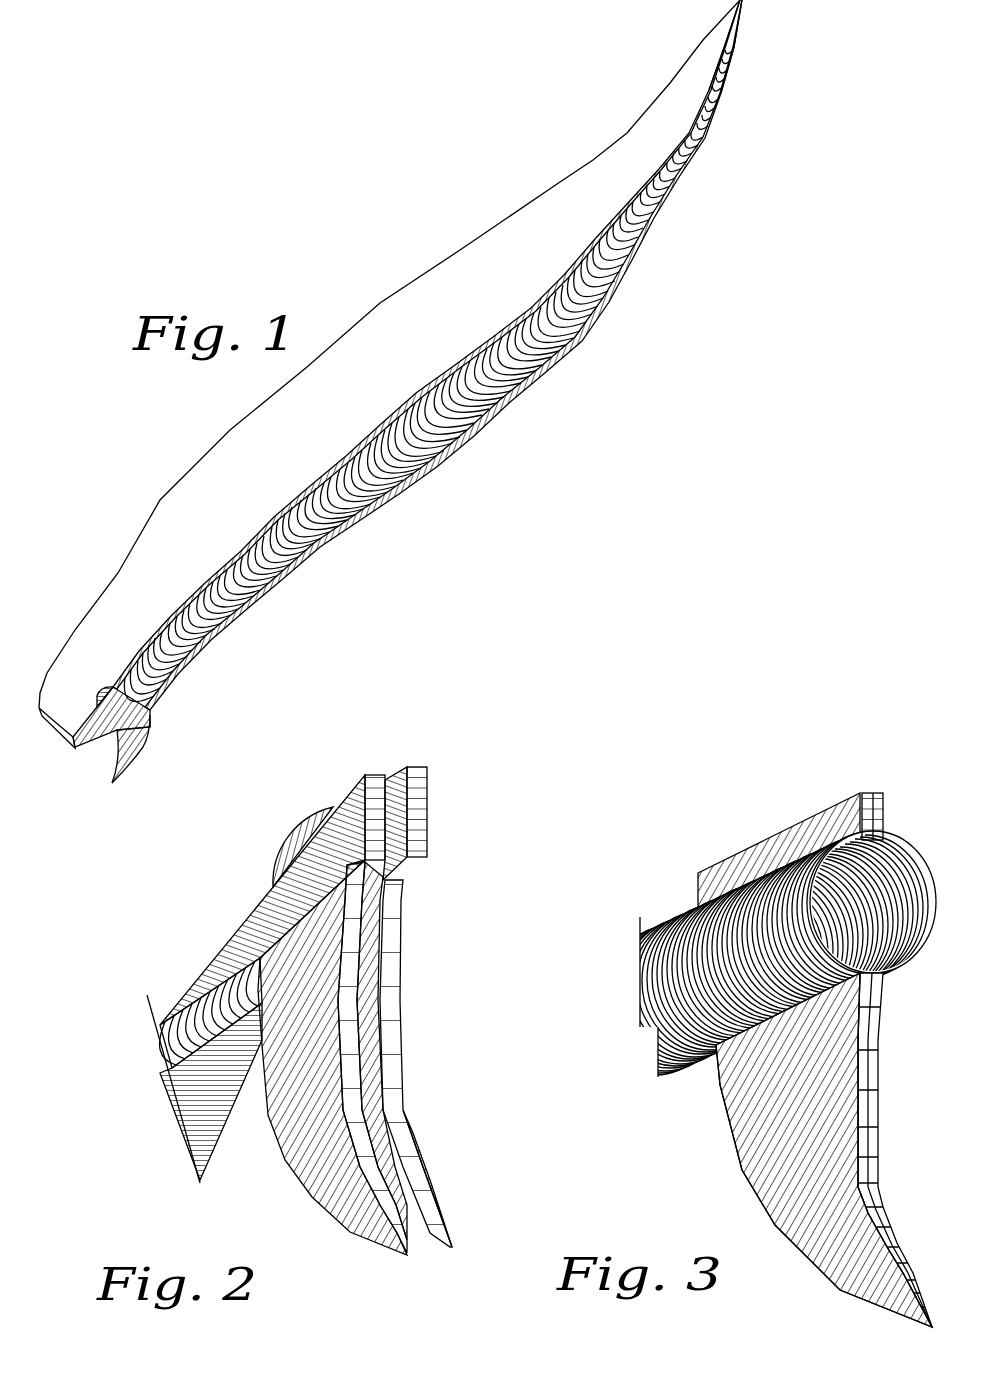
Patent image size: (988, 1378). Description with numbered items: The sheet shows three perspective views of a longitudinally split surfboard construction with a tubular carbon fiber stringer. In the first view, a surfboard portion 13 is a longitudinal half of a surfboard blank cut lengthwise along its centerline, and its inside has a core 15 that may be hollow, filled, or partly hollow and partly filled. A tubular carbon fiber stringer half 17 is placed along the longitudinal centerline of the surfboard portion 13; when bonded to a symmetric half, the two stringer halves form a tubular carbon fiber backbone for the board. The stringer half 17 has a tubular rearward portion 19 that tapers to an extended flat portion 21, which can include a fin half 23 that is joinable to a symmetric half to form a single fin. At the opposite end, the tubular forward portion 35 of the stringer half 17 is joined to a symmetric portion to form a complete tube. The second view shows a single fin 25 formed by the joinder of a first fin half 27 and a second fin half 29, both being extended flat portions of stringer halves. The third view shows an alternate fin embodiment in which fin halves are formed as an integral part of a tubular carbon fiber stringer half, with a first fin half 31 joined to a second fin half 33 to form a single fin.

In FIG. 1, the surfboard portion 13 is at (628, 137).
In FIG. 1, the core 15 is at (492, 399).
In FIG. 1, the tubular carbon fiber stringer half 17 is at (450, 438).
In FIG. 2, the tubular carbon fiber stringer half 17 is at (178, 1122).
In FIG. 1, the tubular rearward portion 19 is at (188, 667).
In FIG. 2, the tubular rearward portion 19 is at (210, 1140).
In FIG. 1, the extended flat portion 21 is at (125, 702).
In FIG. 1, the fin half 23 is at (145, 735).
In FIG. 2, the single fin 25 is at (445, 1088).
In FIG. 2, the first fin half 27 is at (373, 777).
In FIG. 2, the second fin half 29 is at (423, 805).
In FIG. 2, the first fin half 31 is at (340, 1222).
In FIG. 3, the first fin half 31 is at (790, 1217).
In FIG. 2, the second fin half 33 is at (410, 1167).
In FIG. 3, the second fin half 33 is at (880, 1110).
In FIG. 1, the tubular forward portion 35 is at (732, 62).